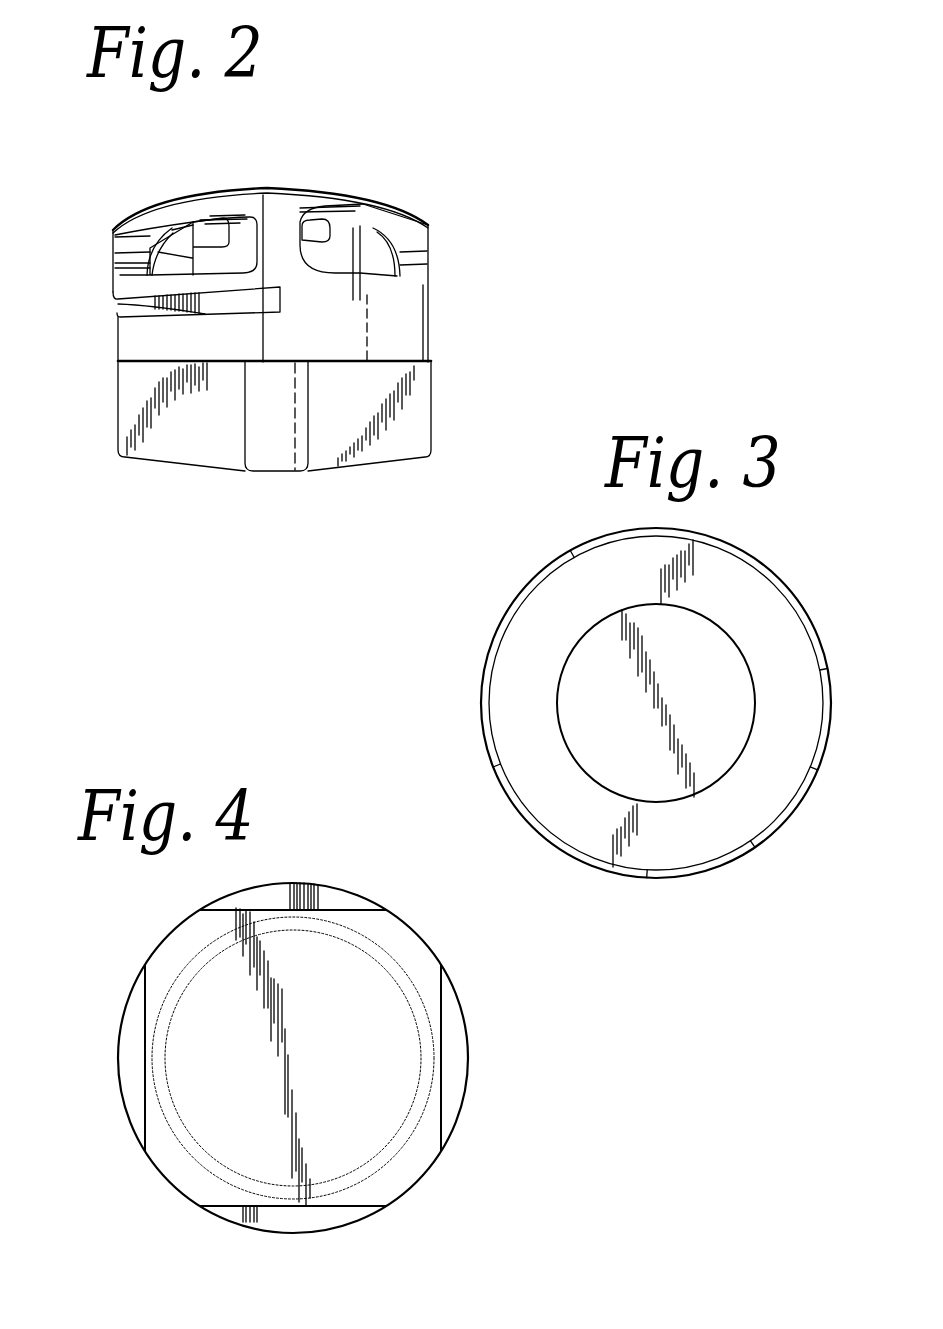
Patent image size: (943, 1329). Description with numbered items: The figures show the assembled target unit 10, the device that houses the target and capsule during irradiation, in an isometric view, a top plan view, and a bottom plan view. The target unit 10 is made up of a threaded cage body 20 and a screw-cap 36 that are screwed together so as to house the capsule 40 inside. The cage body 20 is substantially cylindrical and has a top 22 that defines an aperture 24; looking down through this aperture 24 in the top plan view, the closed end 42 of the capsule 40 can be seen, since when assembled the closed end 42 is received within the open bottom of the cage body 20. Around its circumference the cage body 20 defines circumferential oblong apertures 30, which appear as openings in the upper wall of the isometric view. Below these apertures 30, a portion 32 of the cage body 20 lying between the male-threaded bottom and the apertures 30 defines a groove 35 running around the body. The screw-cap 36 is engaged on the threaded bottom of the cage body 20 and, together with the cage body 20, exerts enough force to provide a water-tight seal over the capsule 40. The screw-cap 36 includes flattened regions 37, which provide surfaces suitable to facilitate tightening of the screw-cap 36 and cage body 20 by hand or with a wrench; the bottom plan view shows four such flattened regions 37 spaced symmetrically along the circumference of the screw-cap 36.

In FIG. 2, the target unit 10 is at (494, 251).
In FIG. 3, the target unit 10 is at (464, 597).
In FIG. 4, the target unit 10 is at (548, 1145).
In FIG. 2, the cage body 20 is at (438, 316).
In FIG. 3, the top 22 is at (508, 668).
In FIG. 3, the aperture 24 is at (723, 746).
In FIG. 2, the circumferential oblong apertures 30 is at (330, 248).
In FIG. 2, the portion 32 is at (130, 345).
In FIG. 2, the groove 35 is at (130, 313).
In FIG. 2, the screw-cap 36 is at (270, 475).
In FIG. 4, the screw-cap 36 is at (414, 930).
In FIG. 2, the flattened regions 37 is at (135, 426).
In FIG. 4, the flattened regions 37 is at (347, 910).
In FIG. 2, the capsule 40 is at (352, 238).
In FIG. 3, the closed end 42 is at (712, 652).